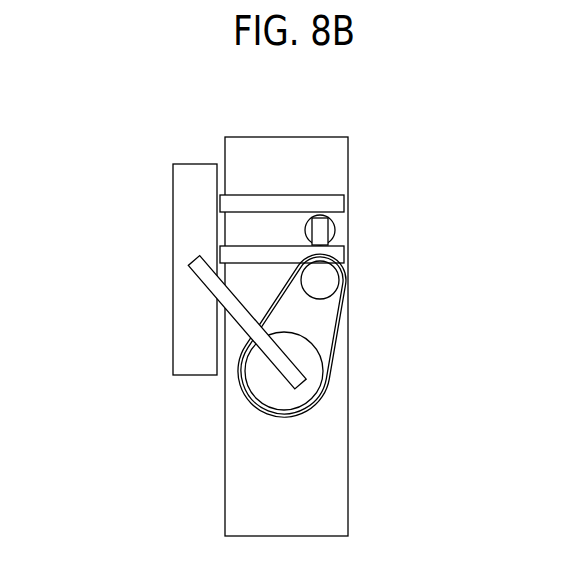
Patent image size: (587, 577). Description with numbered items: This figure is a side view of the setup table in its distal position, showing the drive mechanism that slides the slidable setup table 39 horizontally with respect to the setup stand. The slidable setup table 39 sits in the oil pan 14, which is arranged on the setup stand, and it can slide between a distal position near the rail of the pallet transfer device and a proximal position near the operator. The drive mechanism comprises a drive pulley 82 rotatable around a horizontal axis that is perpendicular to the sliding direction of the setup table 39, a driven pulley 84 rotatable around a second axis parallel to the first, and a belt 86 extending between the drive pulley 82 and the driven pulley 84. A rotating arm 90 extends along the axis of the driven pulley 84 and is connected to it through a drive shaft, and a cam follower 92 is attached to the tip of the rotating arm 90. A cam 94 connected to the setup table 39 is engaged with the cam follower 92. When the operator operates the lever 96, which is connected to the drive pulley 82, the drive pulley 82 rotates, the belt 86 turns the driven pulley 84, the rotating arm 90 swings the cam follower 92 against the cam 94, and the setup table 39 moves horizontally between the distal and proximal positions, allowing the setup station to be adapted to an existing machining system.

The oil pan 14 is at (337, 477).
The slidable setup table 39 is at (195, 188).
The cam 94 is at (277, 257).
The cam follower 92 is at (338, 222).
The rotating arm 90 is at (340, 237).
The driven pulley 84 is at (328, 280).
The belt 86 is at (340, 328).
The drive pulley 82 is at (267, 387).
The lever 96 is at (202, 277).